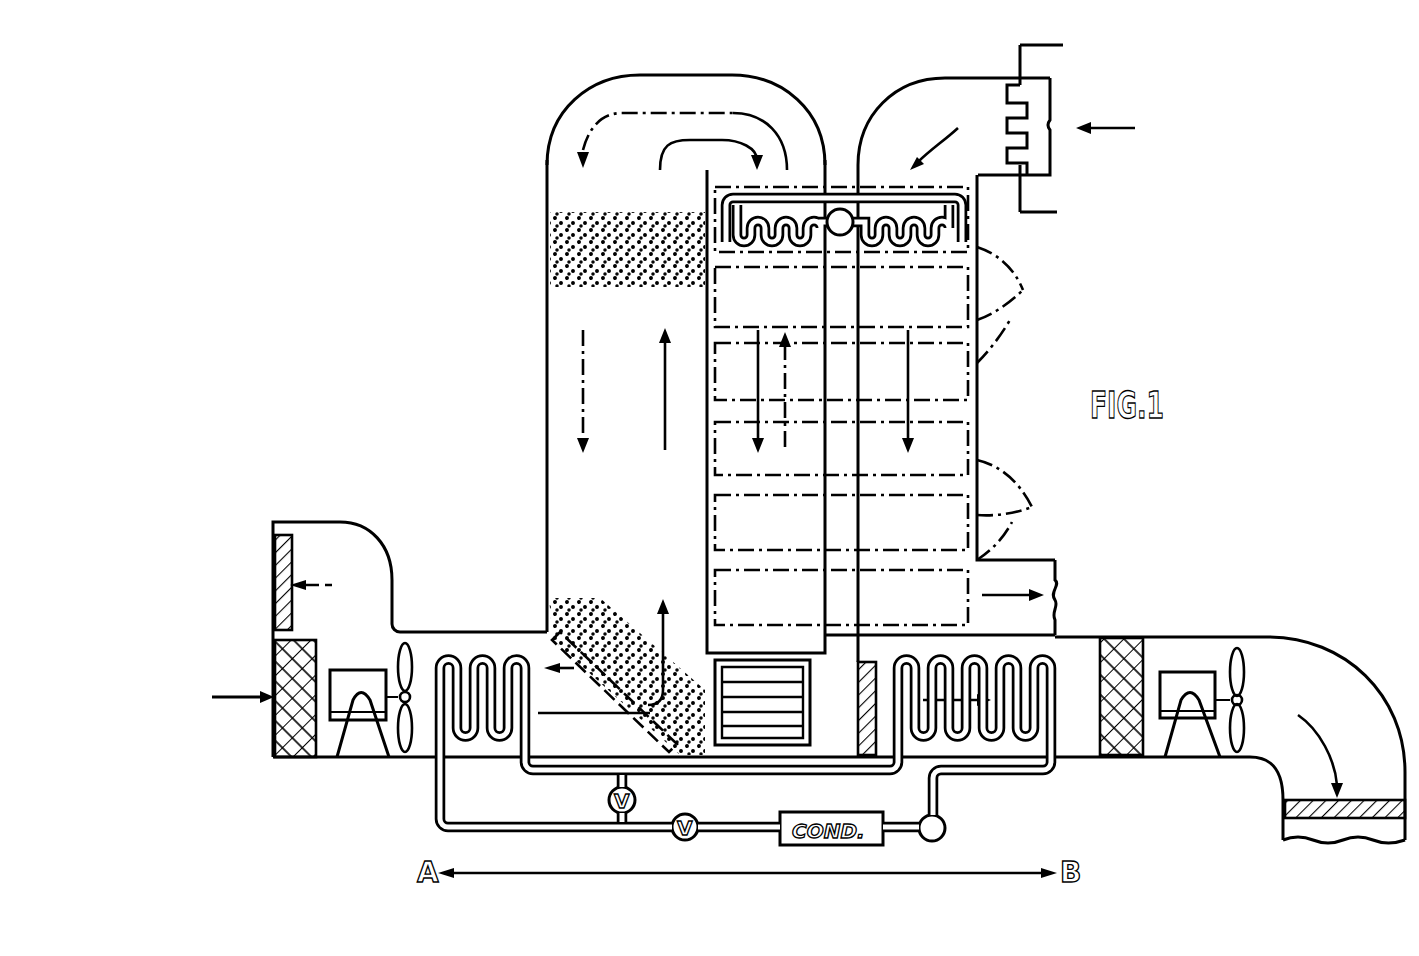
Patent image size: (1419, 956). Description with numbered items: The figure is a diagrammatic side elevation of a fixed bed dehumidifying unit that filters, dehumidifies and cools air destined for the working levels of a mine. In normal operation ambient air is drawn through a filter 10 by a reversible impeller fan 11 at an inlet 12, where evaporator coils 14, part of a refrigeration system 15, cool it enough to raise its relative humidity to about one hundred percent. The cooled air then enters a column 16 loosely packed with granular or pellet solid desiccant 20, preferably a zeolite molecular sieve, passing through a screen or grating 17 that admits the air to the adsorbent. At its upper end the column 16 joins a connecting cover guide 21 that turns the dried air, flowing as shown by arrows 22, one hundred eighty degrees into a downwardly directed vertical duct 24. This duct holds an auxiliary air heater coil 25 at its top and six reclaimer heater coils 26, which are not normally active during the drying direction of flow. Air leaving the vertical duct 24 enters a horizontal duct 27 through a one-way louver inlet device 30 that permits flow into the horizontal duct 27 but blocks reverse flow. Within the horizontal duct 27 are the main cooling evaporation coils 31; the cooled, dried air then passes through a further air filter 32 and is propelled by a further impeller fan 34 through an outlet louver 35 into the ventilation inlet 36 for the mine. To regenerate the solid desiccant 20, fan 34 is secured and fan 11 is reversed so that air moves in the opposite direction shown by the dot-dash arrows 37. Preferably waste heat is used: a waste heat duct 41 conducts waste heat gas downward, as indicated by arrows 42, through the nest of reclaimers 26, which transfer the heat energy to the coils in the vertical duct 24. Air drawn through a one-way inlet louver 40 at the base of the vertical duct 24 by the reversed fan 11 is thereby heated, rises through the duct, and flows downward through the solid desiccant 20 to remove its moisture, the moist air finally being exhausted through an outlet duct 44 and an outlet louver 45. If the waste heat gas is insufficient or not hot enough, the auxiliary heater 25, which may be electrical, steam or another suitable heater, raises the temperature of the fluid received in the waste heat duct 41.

The filter 10 is at (273, 732).
The reversible impeller fan 11 is at (359, 745).
The inlet 12 is at (423, 660).
The evaporator coils 14 is at (479, 658).
The refrigeration system 15 is at (954, 832).
The column 16 is at (547, 335).
The screen or grating 17 is at (636, 732).
The solid desiccant 20 is at (647, 319).
The connecting cover guide 21 is at (639, 75).
The arrows 22 is at (665, 167).
The vertical duct 24 is at (707, 512).
The auxiliary air heater coil 25 is at (1019, 193).
The reclaimer heater coils 26 is at (1027, 403).
The horizontal duct 27 is at (1093, 636).
The one-way louver inlet device 30 is at (853, 667).
The main cooling evaporation coils 31 is at (1013, 652).
The air filter 32 is at (1137, 758).
The impeller fan 34 is at (1190, 680).
The outlet louver 35 is at (1288, 808).
The ventilation inlet 36 is at (1303, 834).
The dot-dash arrows 37 is at (700, 111).
The one-way inlet louver 40 is at (753, 662).
The waste heat duct 41 is at (928, 78).
The arrows 42 is at (922, 144).
The outlet duct 44 is at (380, 536).
The outlet louver 45 is at (272, 580).